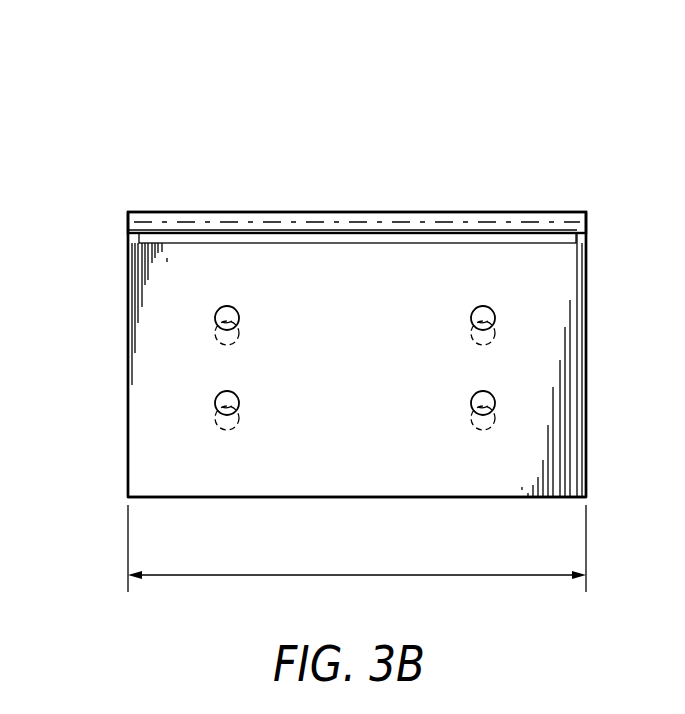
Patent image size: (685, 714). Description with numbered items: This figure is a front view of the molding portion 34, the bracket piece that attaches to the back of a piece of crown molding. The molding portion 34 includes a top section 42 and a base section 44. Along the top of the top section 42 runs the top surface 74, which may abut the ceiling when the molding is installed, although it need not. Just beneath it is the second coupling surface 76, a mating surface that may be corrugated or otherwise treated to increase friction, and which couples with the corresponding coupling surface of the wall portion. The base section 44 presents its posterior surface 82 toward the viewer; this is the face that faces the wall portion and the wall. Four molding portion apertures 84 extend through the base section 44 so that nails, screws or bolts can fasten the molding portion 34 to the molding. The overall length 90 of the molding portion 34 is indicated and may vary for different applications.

The molding portion 34 is at (515, 104).
The top section 42 is at (133, 222).
The base section 44 is at (588, 370).
The top surface 74 is at (567, 211).
The second coupling surface 76 is at (527, 238).
The posterior surface 82 is at (141, 441).
The molding portion apertures 84 is at (239, 316).
The length 90 is at (358, 576).